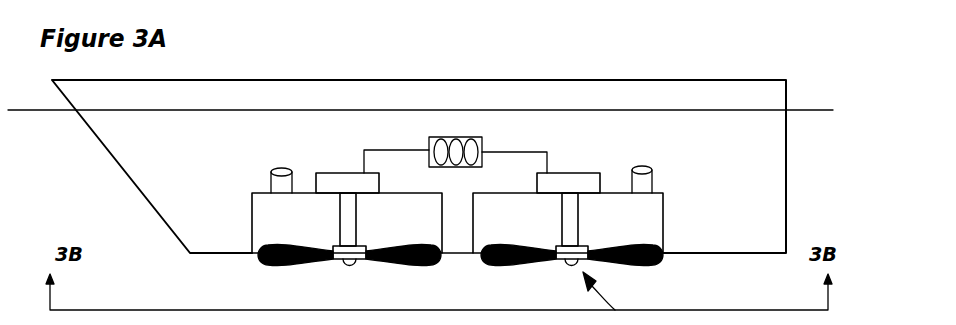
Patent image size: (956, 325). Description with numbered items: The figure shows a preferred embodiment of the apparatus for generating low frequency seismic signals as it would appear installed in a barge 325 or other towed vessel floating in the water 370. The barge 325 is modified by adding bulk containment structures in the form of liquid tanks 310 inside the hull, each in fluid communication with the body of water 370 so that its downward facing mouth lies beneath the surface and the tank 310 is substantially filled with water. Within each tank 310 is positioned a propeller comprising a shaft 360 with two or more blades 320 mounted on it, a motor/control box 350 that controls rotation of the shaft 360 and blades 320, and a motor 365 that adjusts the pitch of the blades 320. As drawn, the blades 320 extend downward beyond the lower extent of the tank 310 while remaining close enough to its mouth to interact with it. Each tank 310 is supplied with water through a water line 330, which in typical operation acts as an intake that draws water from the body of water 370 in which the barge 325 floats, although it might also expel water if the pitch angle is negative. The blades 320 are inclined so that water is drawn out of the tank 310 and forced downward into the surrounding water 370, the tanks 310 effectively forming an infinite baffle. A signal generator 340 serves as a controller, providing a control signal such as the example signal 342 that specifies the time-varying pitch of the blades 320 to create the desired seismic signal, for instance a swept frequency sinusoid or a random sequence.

The liquid tank 310 is at (249, 242).
The propeller blades 320 is at (278, 268).
The barge 325 is at (612, 80).
The water line 330 is at (266, 172).
The signal generator 340 is at (483, 148).
The example signal 342 is at (463, 137).
The motor/control box 350 is at (381, 186).
The shaft 360 is at (357, 224).
The motor 365 is at (335, 245).
The water 370 is at (800, 108).